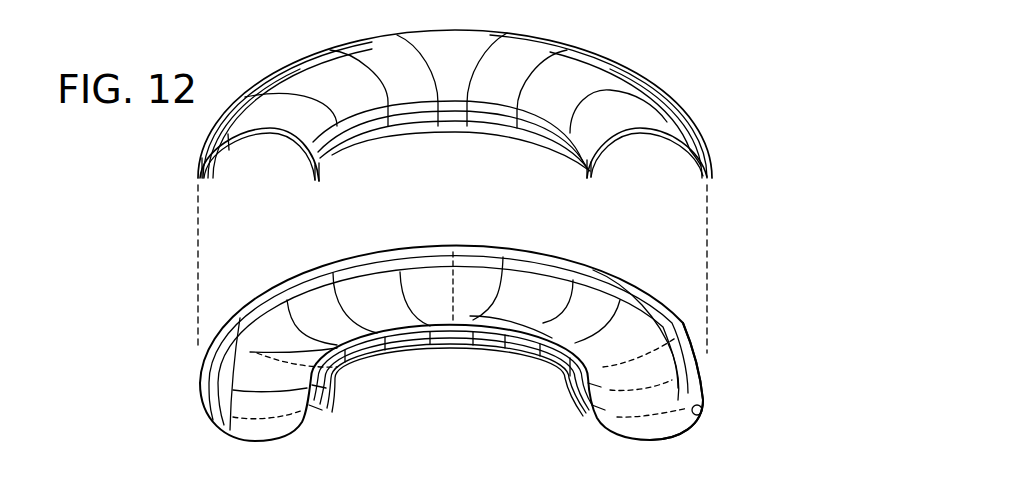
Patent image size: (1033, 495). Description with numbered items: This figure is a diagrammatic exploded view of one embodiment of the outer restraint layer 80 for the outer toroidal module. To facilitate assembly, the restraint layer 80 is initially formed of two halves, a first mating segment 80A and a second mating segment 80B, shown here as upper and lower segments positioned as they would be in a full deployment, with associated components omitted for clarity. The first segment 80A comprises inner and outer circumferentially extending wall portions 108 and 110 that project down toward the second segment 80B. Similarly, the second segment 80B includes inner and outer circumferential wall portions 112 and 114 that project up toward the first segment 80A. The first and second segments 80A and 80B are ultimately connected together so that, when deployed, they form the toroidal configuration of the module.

The outer restraint layer 80 is at (751, 252).
The first mating segment 80A is at (499, 116).
The second mating segment 80B is at (511, 361).
The inner circumferentially extending wall portion 108 is at (575, 162).
The outer circumferentially extending wall portion 110 is at (692, 160).
The inner circumferential wall portion 112 is at (576, 387).
The outer circumferential wall portion 114 is at (700, 416).